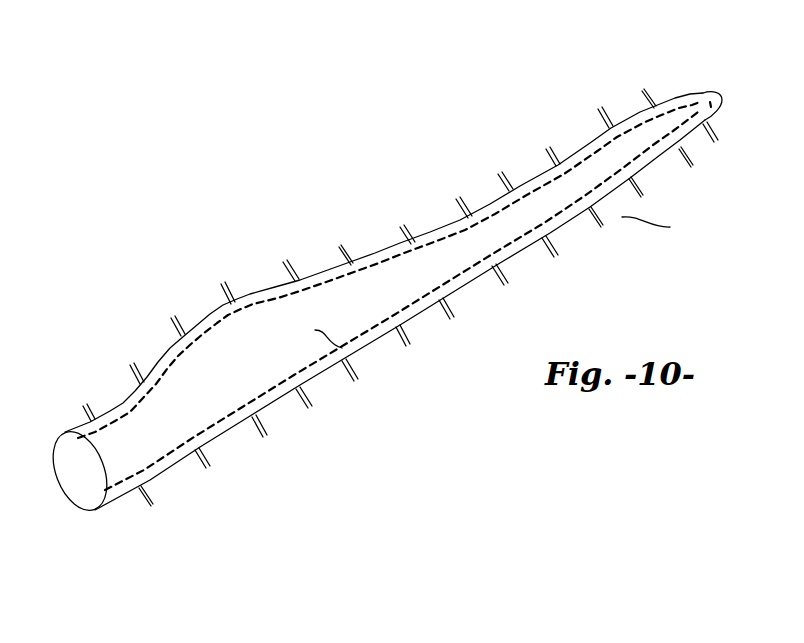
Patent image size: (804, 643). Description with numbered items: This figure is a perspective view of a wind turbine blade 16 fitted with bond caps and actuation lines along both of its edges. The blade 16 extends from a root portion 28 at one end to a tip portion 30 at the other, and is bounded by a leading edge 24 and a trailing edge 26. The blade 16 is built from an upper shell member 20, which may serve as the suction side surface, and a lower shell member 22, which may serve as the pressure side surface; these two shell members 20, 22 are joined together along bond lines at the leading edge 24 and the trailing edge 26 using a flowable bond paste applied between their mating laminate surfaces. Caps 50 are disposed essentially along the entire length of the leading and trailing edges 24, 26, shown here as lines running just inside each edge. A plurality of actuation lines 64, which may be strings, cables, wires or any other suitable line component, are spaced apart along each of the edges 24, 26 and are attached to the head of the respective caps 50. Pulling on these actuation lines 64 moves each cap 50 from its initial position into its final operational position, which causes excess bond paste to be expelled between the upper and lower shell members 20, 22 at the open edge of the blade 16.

The wind turbine blade 16 is at (382, 294).
The upper shell member 20 is at (401, 299).
The lower shell member 22 is at (267, 343).
The leading edge 24 is at (470, 282).
The trailing edge 26 is at (493, 203).
The root portion 28 is at (117, 433).
The tip portion 30 is at (700, 108).
The bond cap 50 is at (388, 260).
The actuation lines 64 is at (500, 177).